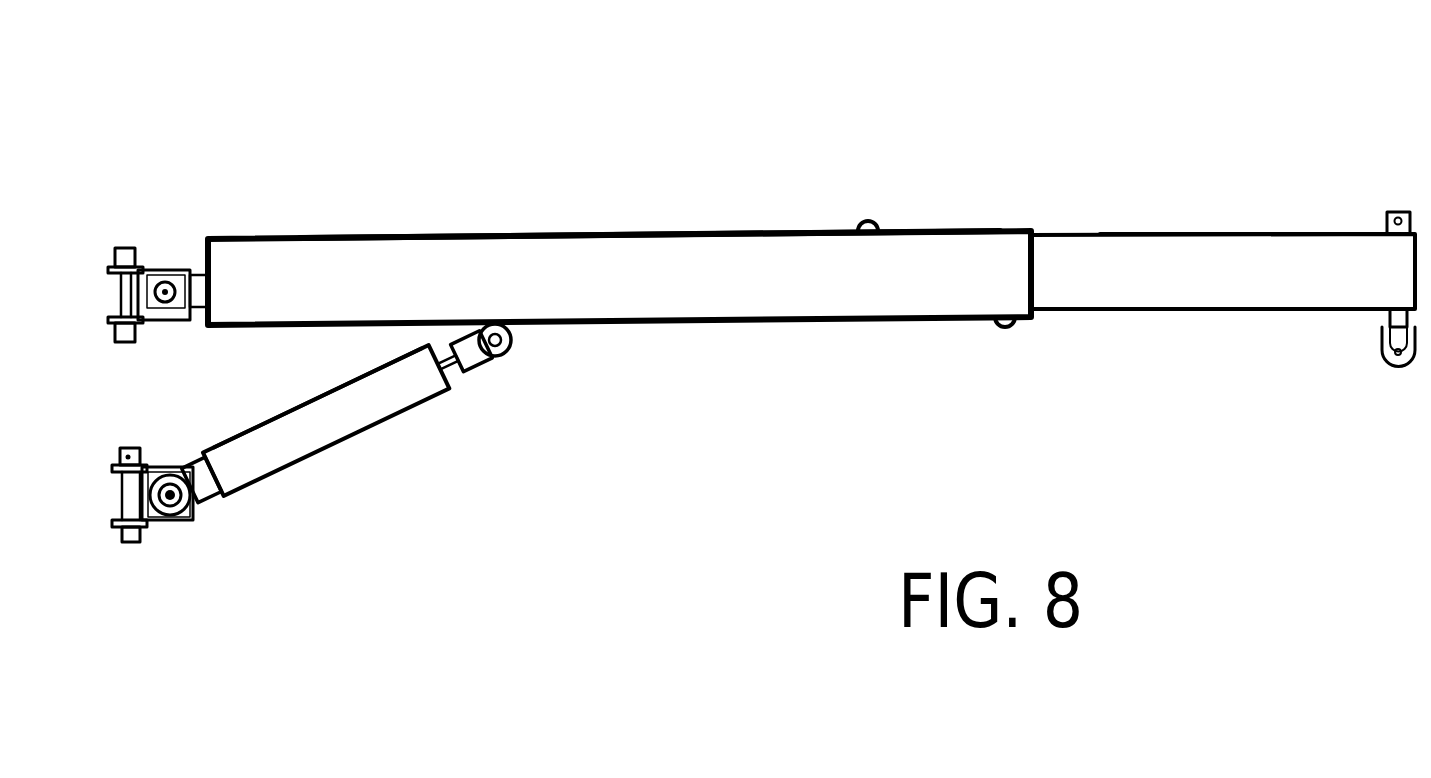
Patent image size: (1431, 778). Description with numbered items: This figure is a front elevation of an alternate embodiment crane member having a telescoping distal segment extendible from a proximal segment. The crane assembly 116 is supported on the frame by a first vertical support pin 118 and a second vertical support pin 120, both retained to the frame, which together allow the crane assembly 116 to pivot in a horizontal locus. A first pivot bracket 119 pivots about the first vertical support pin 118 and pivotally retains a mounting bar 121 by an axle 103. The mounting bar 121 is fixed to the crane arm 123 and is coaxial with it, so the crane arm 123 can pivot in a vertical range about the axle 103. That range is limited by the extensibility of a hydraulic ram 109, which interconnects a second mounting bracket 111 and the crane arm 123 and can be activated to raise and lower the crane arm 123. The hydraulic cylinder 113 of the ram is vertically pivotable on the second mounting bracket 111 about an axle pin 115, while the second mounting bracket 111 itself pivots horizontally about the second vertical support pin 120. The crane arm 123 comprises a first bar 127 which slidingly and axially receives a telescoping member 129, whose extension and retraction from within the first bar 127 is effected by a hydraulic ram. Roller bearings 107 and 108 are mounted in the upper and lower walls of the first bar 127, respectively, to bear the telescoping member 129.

The axle 103 is at (168, 285).
The roller bearing 107 is at (873, 212).
The roller bearing 108 is at (1005, 330).
The hydraulic ram 109 is at (328, 437).
The second mounting bracket 111 is at (173, 507).
The hydraulic cylinder 113 is at (267, 422).
The axle pin 115 is at (170, 503).
The crane assembly 116 is at (1055, 190).
The first vertical support pin 118 is at (125, 250).
The first pivot bracket 119 is at (150, 265).
The second vertical support pin 120 is at (130, 542).
The mounting bar 121 is at (197, 300).
The crane arm 123 is at (683, 232).
The first bar 127 is at (550, 253).
The telescoping member 129 is at (1172, 232).